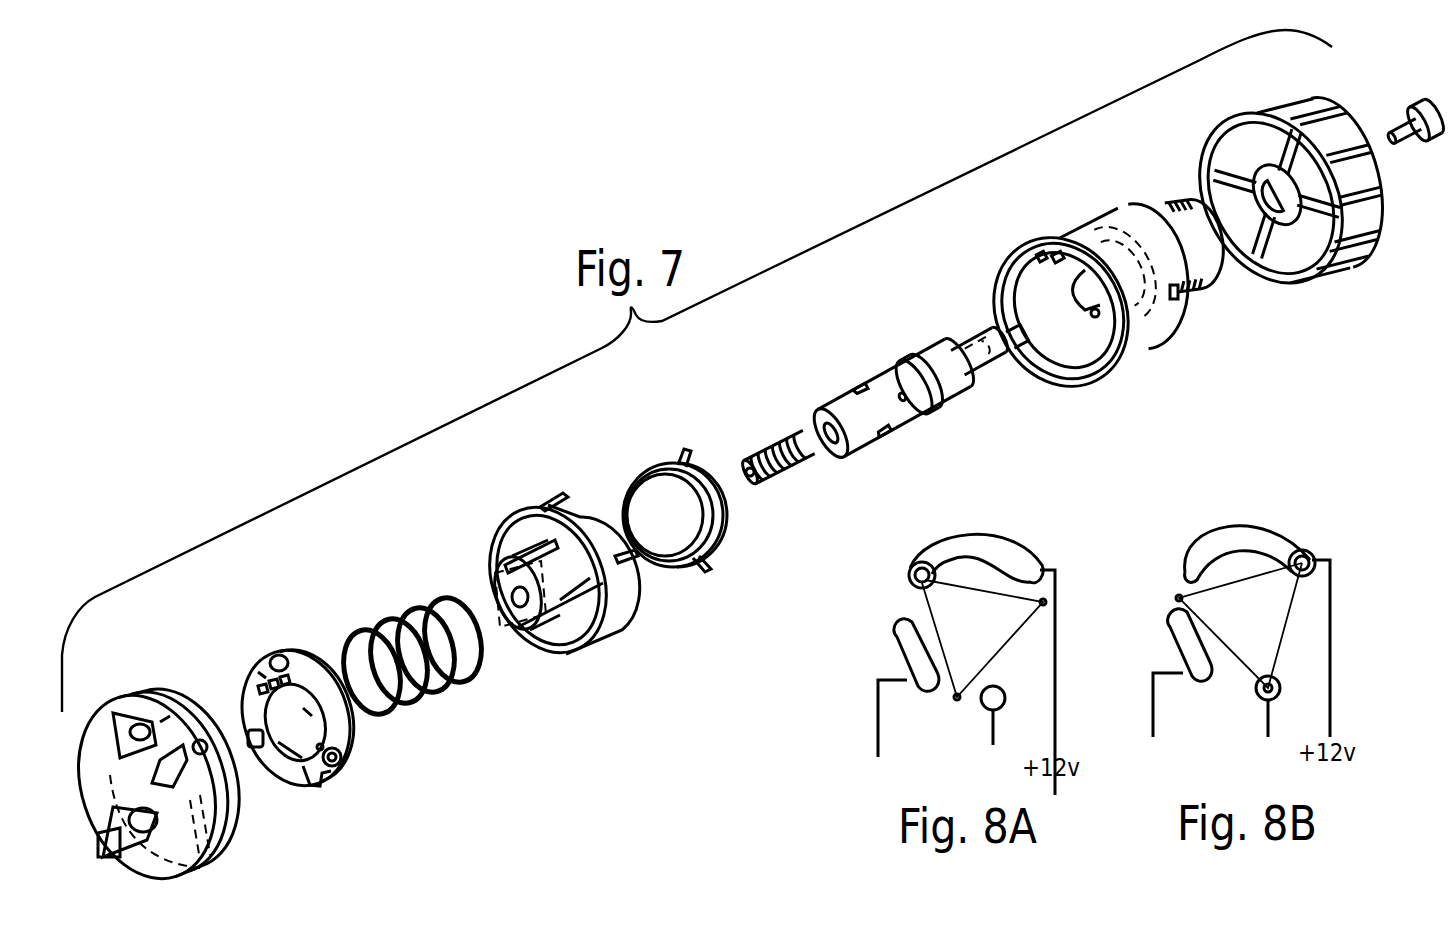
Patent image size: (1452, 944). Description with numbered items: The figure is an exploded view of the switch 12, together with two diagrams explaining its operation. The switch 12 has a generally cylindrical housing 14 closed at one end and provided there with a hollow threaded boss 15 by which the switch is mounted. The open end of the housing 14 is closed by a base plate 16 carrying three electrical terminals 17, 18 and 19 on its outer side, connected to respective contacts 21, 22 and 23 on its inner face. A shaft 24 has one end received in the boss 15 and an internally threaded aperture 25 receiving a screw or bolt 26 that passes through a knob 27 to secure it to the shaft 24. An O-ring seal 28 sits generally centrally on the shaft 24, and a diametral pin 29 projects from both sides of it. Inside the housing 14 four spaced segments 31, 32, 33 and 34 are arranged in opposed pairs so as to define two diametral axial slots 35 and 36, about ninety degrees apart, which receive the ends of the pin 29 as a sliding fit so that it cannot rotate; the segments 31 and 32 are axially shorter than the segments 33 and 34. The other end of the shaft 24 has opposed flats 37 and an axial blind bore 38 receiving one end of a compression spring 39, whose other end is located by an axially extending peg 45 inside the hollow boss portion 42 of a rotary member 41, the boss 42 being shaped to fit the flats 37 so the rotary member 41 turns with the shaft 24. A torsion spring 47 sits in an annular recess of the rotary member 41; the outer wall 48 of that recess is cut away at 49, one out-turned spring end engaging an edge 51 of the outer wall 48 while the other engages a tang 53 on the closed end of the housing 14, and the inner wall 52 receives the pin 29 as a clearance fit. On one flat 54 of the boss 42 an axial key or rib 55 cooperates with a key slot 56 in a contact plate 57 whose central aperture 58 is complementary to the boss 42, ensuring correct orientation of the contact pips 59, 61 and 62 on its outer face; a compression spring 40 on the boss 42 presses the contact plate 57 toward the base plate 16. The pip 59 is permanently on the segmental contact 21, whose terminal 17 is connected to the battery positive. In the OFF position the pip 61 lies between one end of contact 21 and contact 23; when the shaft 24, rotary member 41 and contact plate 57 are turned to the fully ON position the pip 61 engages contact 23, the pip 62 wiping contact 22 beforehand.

In FIG. 7, the switch 12 is at (1160, 433).
In FIG. 7, the housing 14 is at (1120, 278).
In FIG. 7, the threaded boss 15 is at (1197, 244).
In FIG. 7, the base plate 16 is at (180, 763).
In FIG. 7, the electrical terminal 17 is at (117, 847).
In FIG. 8A, the electrical terminal 17 is at (1056, 690).
In FIG. 8B, the electrical terminal 17 is at (1331, 615).
In FIG. 8A, the electrical terminal 18 is at (878, 718).
In FIG. 8B, the electrical terminal 18 is at (1153, 720).
In FIG. 7, the electrical terminal 19 is at (112, 713).
In FIG. 8A, the electrical terminal 19 is at (994, 735).
In FIG. 8B, the electrical terminal 19 is at (1266, 720).
In FIG. 7, the contact 21 is at (203, 873).
In FIG. 8A, the contact 21 is at (985, 545).
In FIG. 8B, the contact 21 is at (1258, 540).
In FIG. 7, the contact 22 is at (200, 735).
In FIG. 8A, the contact 22 is at (905, 648).
In FIG. 8B, the contact 22 is at (1180, 645).
In FIG. 7, the contact 23 is at (167, 720).
In FIG. 8A, the contact 23 is at (997, 688).
In FIG. 8B, the contact 23 is at (1280, 686).
In FIG. 7, the shaft 24 is at (908, 420).
In FIG. 7, the internally threaded aperture 25 is at (981, 350).
In FIG. 7, the screw or bolt 26 is at (1440, 138).
In FIG. 7, the knob 27 is at (1363, 222).
In FIG. 7, the O-ring seal 28 is at (890, 407).
In FIG. 7, the diametral pin 29 is at (902, 397).
In FIG. 7, the segment 31 is at (1132, 266).
In FIG. 7, the segment 32 is at (1095, 313).
In FIG. 7, the segment 33 is at (1150, 278).
In FIG. 7, the segment 34 is at (1017, 336).
In FIG. 7, the slot 35 is at (1126, 290).
In FIG. 7, the slot 36 is at (1058, 257).
In FIG. 7, the flats 37 is at (872, 410).
In FIG. 7, the axial blind bore 38 is at (830, 433).
In FIG. 7, the compression spring 39 is at (790, 470).
In FIG. 7, the compression spring 40 is at (438, 687).
In FIG. 7, the rotary member 41 is at (561, 562).
In FIG. 7, the hollow boss portion 42 is at (560, 602).
In FIG. 7, the axially-extending peg 45 is at (523, 587).
In FIG. 7, the torsion spring 47 is at (725, 532).
In FIG. 7, the outer wall 48 is at (554, 502).
In FIG. 7, the cut-away 49 is at (580, 505).
In FIG. 7, the edge 51 is at (626, 556).
In FIG. 7, the inner wall 52 is at (607, 522).
In FIG. 7, the tang or axial extension 53 is at (1041, 256).
In FIG. 7, the flat 54 is at (520, 594).
In FIG. 7, the key or rib 55 is at (531, 556).
In FIG. 7, the key slot 56 is at (261, 677).
In FIG. 7, the contact plate 57 is at (303, 702).
In FIG. 7, the central aperture 58 is at (307, 712).
In FIG. 7, the contact pip 59 is at (342, 764).
In FIG. 8A, the contact pip 59 is at (920, 562).
In FIG. 8B, the contact pip 59 is at (1312, 553).
In FIG. 7, the contact pip 61 is at (257, 750).
In FIG. 8A, the contact pip 61 is at (1048, 602).
In FIG. 8B, the contact pip 61 is at (1274, 698).
In FIG. 7, the contact pip 62 is at (279, 655).
In FIG. 8A, the contact pip 62 is at (959, 700).
In FIG. 8B, the contact pip 62 is at (1177, 595).